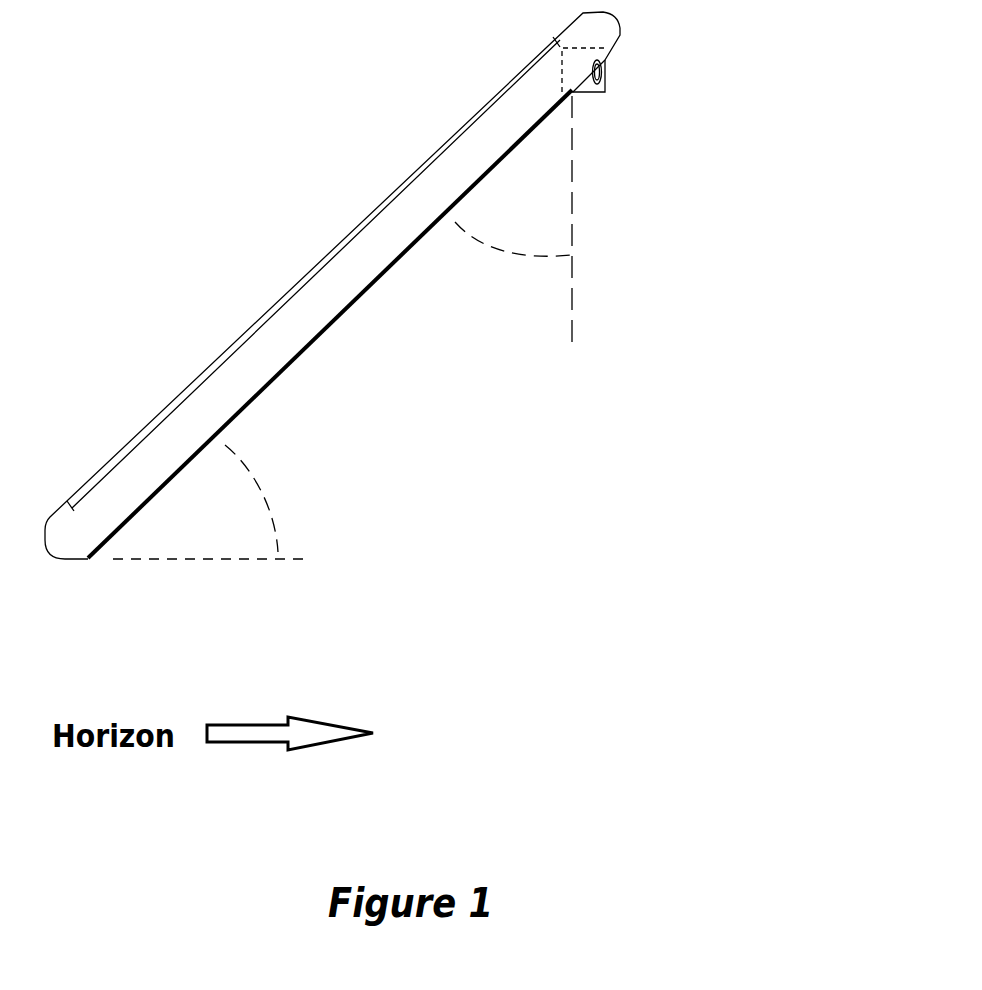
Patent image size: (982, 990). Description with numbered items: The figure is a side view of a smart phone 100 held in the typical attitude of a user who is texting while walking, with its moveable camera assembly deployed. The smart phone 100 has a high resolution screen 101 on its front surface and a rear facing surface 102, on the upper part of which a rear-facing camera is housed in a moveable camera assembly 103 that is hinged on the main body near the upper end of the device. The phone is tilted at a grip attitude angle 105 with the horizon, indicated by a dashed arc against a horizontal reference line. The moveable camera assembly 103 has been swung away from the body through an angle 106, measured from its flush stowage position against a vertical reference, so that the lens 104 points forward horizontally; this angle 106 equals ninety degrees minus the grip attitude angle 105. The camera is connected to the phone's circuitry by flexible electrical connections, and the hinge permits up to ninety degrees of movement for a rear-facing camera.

The smart phone 100 is at (302, 325).
The high resolution screen 101 is at (375, 195).
The rear facing surface 102 is at (280, 385).
The moveable camera assembly 103 is at (580, 103).
The lens 104 is at (625, 80).
The grip attitude angle 105 is at (282, 493).
The angle of movement of the moveable camera assembly 106 is at (493, 272).